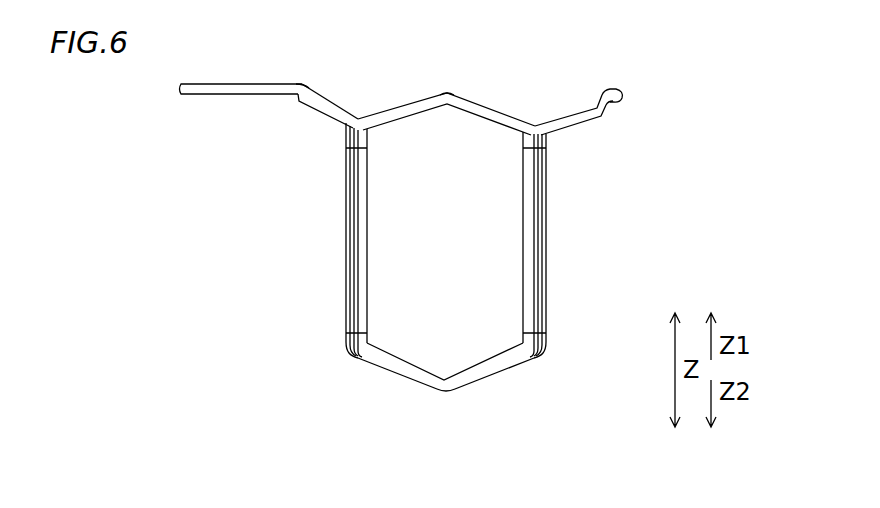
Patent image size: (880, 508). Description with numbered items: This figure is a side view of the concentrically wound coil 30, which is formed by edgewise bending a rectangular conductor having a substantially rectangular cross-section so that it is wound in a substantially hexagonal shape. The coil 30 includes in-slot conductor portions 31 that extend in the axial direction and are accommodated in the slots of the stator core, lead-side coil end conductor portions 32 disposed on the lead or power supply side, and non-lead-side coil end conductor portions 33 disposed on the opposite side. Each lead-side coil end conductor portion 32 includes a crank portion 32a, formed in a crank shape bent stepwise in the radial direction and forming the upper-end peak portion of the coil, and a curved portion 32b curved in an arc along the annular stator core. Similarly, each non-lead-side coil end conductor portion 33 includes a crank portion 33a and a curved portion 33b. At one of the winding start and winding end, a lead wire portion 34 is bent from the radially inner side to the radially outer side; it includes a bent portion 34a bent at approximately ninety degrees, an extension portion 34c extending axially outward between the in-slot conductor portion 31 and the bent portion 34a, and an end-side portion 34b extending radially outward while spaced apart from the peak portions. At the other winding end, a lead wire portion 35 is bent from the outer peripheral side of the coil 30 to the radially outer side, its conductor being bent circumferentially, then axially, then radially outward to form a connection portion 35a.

The concentrically wound coil 30 is at (664, 119).
The in-slot conductor portion 31 is at (345, 236).
The lead-side coil end conductor portion 32 is at (478, 104).
The crank portion 32a is at (450, 97).
The curved portion 32b is at (403, 107).
The non-lead-side coil end conductor portion 33 is at (418, 382).
The crank portion 33a is at (443, 392).
The curved portion 33b is at (383, 369).
The lead wire portion 34 is at (285, 83).
The bent portion 34a is at (304, 86).
The end-side portion 34b is at (233, 83).
The extension portion 34c is at (316, 112).
The lead wire portion 35 is at (582, 111).
The connection portion 35a is at (621, 90).